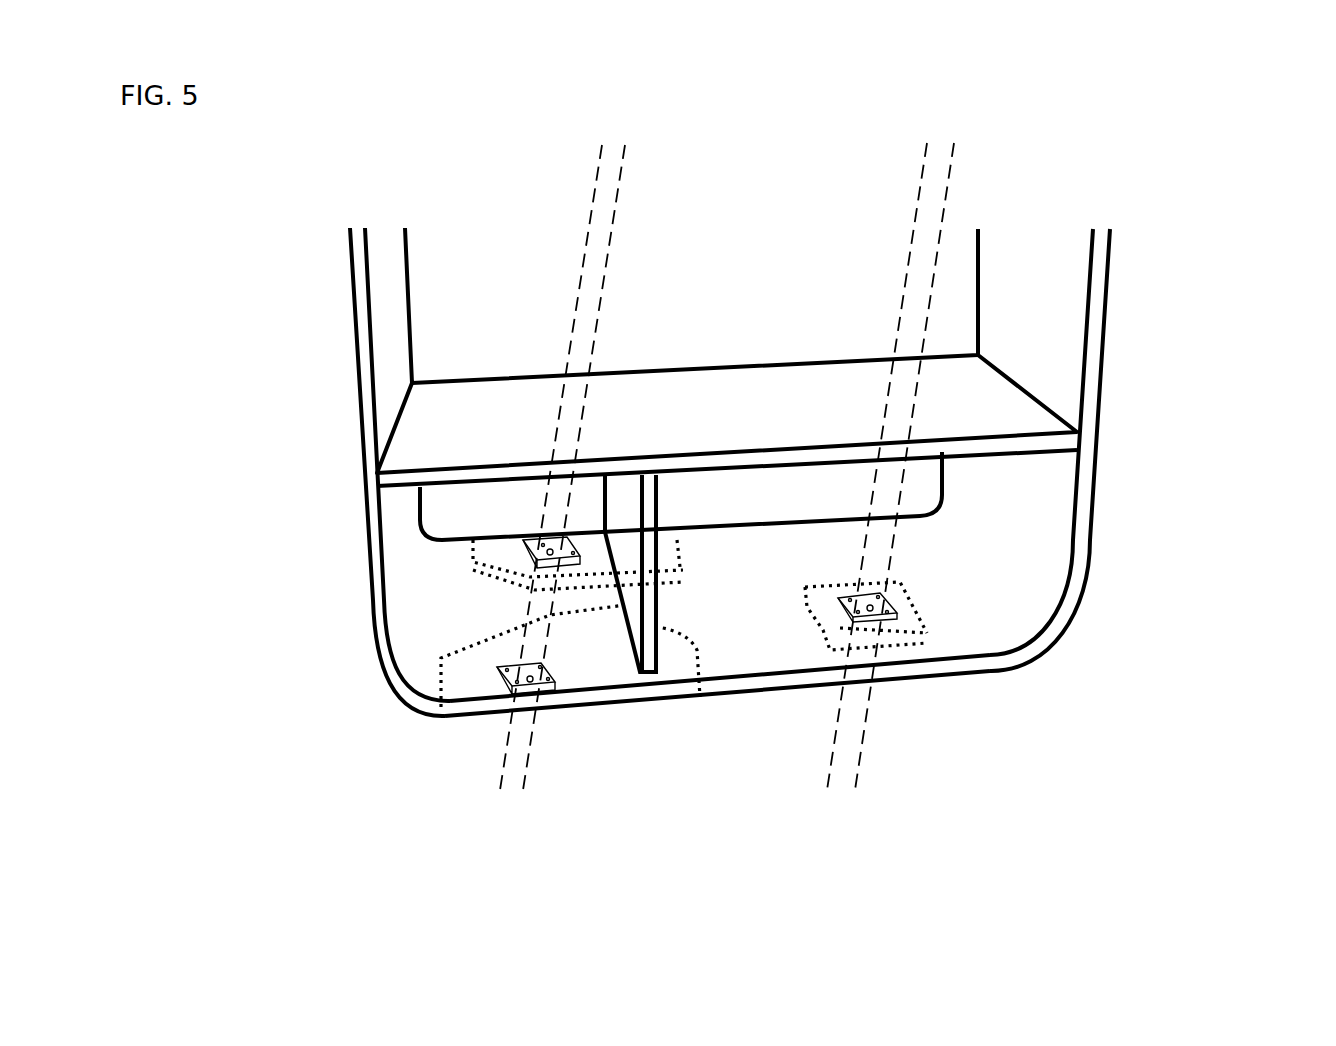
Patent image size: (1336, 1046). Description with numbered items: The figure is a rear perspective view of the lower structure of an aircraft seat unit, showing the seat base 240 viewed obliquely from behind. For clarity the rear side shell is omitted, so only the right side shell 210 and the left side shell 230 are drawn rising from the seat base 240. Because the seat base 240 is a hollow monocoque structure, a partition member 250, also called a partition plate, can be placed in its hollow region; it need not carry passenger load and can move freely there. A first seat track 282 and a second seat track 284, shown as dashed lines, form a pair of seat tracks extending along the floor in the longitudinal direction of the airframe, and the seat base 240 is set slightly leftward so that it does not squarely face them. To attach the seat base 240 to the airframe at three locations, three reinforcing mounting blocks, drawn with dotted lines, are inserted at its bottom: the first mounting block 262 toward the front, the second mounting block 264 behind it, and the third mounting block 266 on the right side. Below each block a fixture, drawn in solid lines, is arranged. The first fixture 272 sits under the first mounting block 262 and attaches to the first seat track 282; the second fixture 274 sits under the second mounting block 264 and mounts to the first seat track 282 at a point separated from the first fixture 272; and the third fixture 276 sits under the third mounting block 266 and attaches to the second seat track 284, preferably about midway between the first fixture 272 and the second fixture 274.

The right side shell 210 is at (1108, 285).
The left side shell 230 is at (353, 317).
The seat base 240 is at (1085, 595).
The partition member 250 is at (652, 628).
The first mounting block 262 is at (505, 548).
The second mounting block 264 is at (478, 670).
The third mounting block 266 is at (907, 603).
The first fixture 272 is at (420, 488).
The second fixture 274 is at (547, 688).
The third fixture 276 is at (887, 618).
The first seat track 282 is at (602, 235).
The second seat track 284 is at (925, 203).